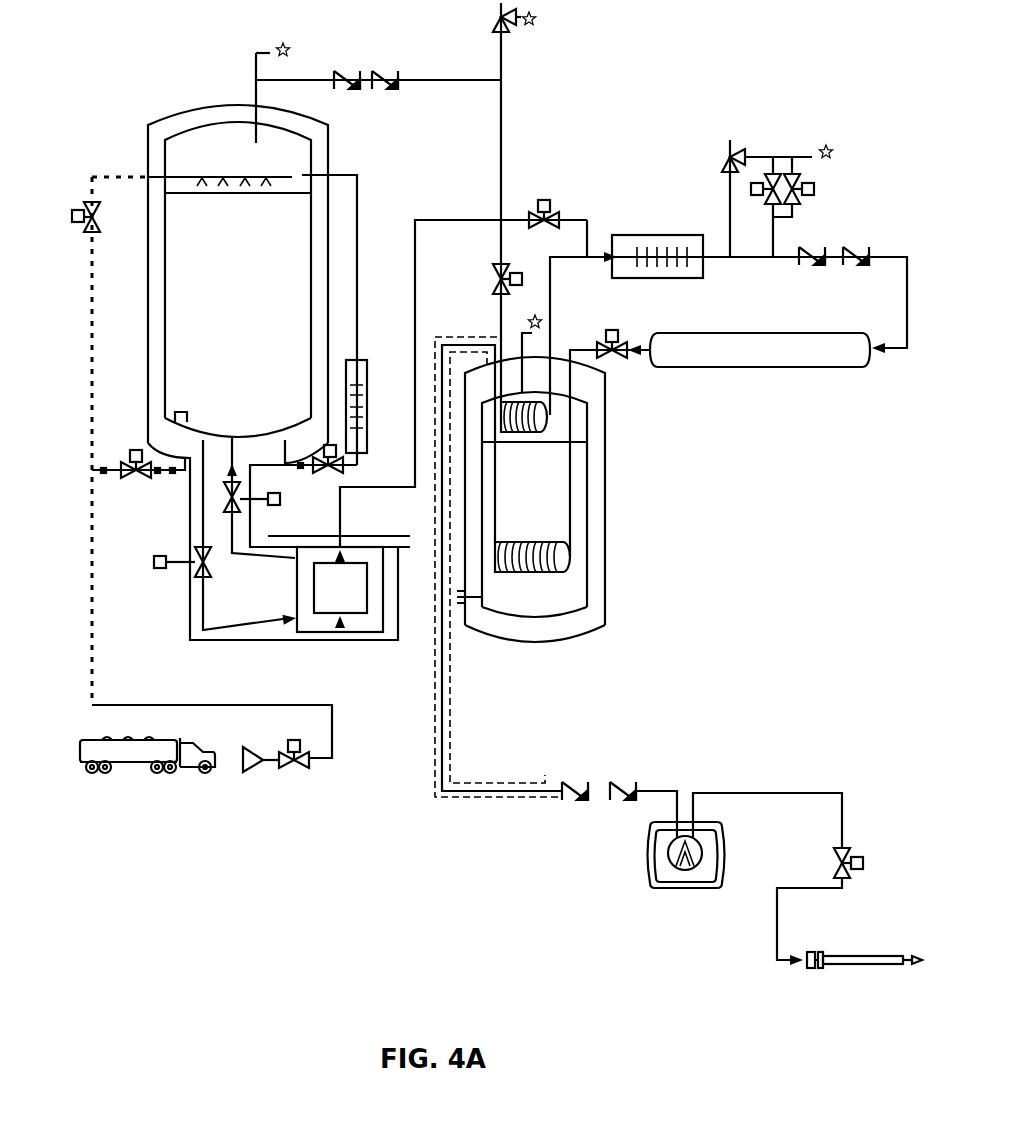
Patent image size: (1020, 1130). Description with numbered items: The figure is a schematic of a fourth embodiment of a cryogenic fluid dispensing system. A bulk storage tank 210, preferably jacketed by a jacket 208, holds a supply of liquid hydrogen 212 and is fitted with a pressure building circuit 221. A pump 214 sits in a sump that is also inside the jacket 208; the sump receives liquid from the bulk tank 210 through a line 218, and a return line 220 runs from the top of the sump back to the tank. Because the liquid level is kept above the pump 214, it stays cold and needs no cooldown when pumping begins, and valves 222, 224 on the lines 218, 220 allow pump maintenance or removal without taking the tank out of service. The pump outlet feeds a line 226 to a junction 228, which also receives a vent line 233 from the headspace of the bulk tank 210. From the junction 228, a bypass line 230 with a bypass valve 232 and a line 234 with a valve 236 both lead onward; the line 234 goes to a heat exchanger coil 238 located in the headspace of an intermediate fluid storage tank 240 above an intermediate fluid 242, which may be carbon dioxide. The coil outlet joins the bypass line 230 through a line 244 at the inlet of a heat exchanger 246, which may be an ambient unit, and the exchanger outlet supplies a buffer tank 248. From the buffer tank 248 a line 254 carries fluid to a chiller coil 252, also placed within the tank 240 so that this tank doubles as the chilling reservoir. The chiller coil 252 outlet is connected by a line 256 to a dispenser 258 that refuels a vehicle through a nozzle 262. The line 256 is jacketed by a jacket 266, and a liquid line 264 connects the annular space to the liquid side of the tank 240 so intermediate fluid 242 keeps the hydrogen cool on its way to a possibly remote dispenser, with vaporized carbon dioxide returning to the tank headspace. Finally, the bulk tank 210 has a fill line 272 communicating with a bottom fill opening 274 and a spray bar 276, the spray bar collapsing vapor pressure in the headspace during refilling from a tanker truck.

The jacket 208 is at (147, 148).
The bulk storage tank 210 is at (156, 102).
The liquid hydrogen 212 is at (260, 364).
The pump 214 is at (357, 613).
The line 218 is at (200, 602).
The return line 220 is at (232, 555).
The pressure building circuit 221 is at (340, 176).
The valve 222 is at (198, 558).
The valve 224 is at (238, 508).
The line 226 is at (447, 219).
The junction 228 is at (502, 218).
The bypass line 230 is at (583, 219).
The bypass valve 232 is at (546, 200).
The vent line 233 is at (502, 100).
The line 234 is at (500, 242).
The valve 236 is at (495, 290).
The heat exchanger coil 238 is at (547, 418).
The intermediate fluid storage tank 240 is at (607, 598).
The intermediate fluid 242 is at (548, 528).
The line 244 is at (550, 325).
The heat exchanger 246 is at (657, 279).
The buffer tank 248 is at (837, 367).
The chiller coil 252 is at (535, 572).
The line 254 is at (573, 378).
The line 256 is at (462, 720).
The dispenser 258 is at (650, 848).
The nozzle 262 is at (848, 965).
The liquid line 264 is at (458, 603).
The jacket 266 is at (545, 775).
The fill line 272 is at (90, 660).
The bottom fill opening 274 is at (147, 446).
The spray bar 276 is at (213, 176).